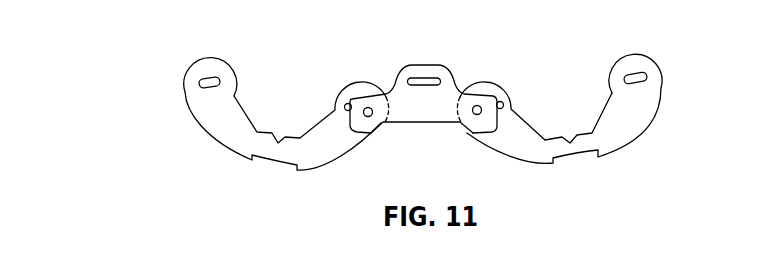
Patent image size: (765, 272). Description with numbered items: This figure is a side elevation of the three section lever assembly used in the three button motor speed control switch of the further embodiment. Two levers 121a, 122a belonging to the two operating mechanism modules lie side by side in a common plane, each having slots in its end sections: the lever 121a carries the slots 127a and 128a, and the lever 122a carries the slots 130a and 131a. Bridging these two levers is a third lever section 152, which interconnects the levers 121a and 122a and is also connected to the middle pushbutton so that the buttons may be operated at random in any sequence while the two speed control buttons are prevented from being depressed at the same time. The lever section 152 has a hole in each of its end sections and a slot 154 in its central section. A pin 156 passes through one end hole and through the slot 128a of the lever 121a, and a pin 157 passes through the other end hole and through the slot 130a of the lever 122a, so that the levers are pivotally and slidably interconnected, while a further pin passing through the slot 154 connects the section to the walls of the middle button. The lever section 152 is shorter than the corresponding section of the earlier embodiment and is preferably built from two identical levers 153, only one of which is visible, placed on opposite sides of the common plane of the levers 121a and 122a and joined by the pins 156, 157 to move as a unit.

The lever 121a is at (224, 147).
The lever 122a is at (628, 134).
The slot 127a is at (212, 81).
The slot 131a is at (641, 76).
The slot 128a is at (349, 103).
The slot 130a is at (501, 100).
The third lever section 152 is at (437, 123).
The lever 153 is at (405, 113).
The slot 154 is at (426, 78).
The pin 156 is at (367, 117).
The pin 157 is at (477, 116).